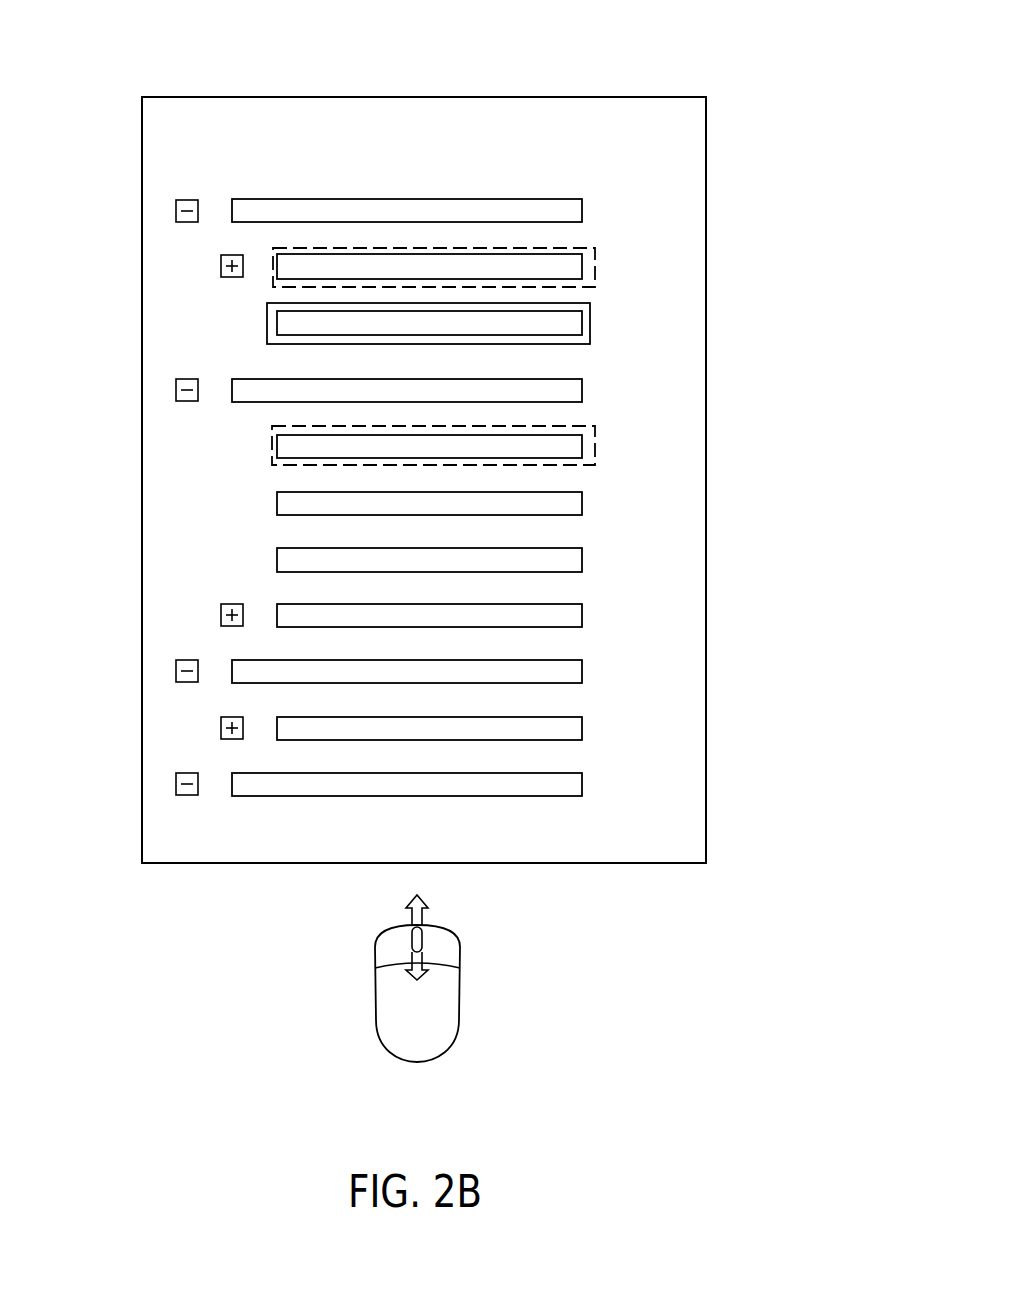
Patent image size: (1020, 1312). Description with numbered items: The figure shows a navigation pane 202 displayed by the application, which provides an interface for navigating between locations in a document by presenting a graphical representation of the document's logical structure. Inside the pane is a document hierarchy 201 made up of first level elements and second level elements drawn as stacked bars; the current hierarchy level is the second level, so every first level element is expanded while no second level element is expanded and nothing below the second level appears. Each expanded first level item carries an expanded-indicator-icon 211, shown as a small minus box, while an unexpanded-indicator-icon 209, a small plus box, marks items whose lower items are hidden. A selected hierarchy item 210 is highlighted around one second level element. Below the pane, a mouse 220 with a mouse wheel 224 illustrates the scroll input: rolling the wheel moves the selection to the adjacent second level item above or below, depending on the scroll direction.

The document hierarchy 201 is at (481, 112).
The navigation pane 202 is at (610, 97).
The unexpanded-indicator-icon 209 is at (228, 255).
The selected hierarchy item 210 is at (562, 302).
The expanded-indicator-icon 211 is at (187, 199).
The mouse 220 is at (376, 1003).
The mouse wheel 224 is at (413, 940).